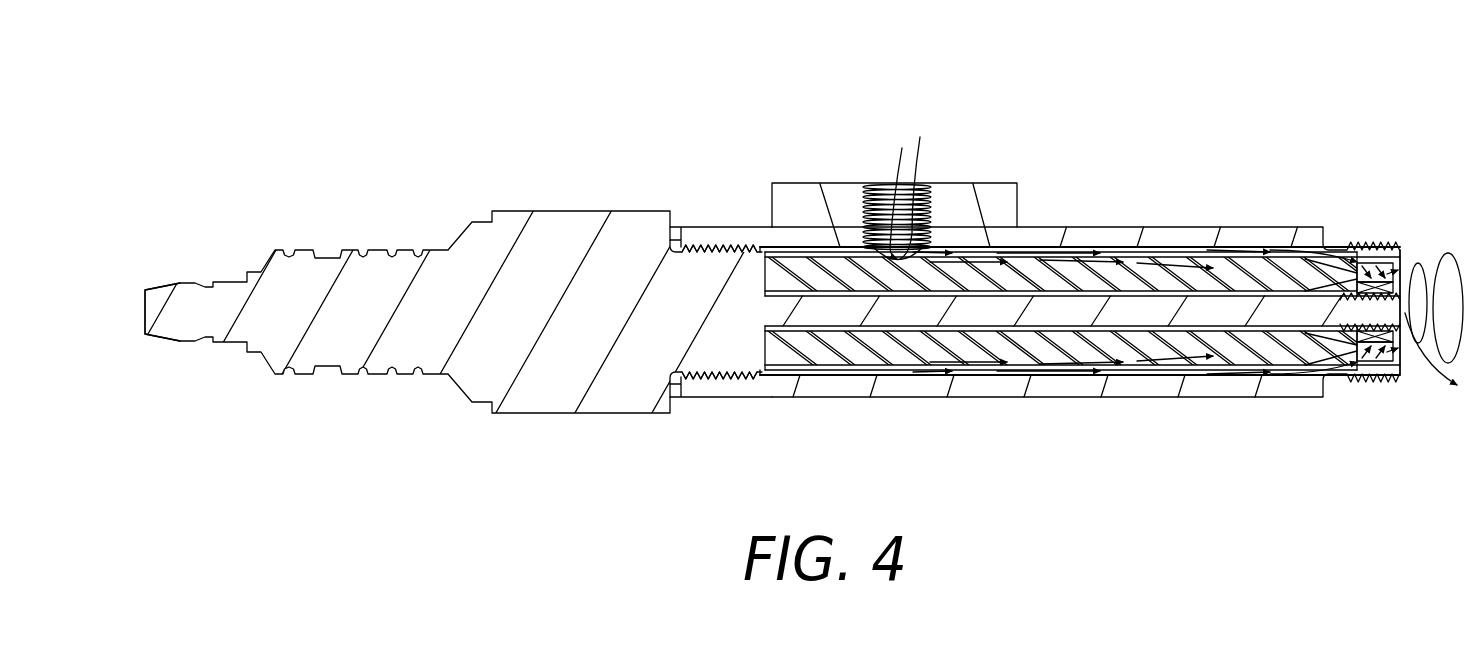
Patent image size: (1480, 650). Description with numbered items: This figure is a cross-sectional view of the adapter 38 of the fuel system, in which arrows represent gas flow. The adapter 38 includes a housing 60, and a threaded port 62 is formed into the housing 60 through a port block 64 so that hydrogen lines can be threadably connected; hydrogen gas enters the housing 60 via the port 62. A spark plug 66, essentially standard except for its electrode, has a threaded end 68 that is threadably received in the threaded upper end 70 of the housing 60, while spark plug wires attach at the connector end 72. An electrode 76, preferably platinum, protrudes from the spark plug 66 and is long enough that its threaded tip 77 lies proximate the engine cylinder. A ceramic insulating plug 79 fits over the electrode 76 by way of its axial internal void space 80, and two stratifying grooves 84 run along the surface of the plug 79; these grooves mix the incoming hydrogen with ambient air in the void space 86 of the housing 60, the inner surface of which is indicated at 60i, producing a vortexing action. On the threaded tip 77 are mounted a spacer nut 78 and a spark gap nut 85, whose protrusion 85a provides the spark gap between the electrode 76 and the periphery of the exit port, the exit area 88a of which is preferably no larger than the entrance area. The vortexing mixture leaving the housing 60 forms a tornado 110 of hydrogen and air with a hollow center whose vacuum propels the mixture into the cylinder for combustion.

The adapter 38 is at (633, 117).
The spark plug 66 is at (410, 236).
The connector end 72 is at (160, 295).
The threaded end 68 is at (712, 358).
The threaded upper end 70 is at (703, 230).
The housing 60 is at (1117, 230).
The inner surface of housing 60i is at (790, 372).
The port block 64 is at (955, 188).
The threaded port 62 is at (880, 185).
The stratifying grooves 84 is at (1170, 265).
The axial internal void space 80 is at (1260, 295).
The plug 79 is at (827, 343).
The electrode 76 is at (920, 317).
The void space 86 is at (997, 253).
The exit area 88a is at (1370, 272).
The spacer nut 78 is at (1365, 345).
The threaded tip 77 is at (1362, 310).
The protrusion 85a is at (1407, 267).
The spark gap nut 85 is at (1405, 315).
The tornado 110 is at (1450, 288).